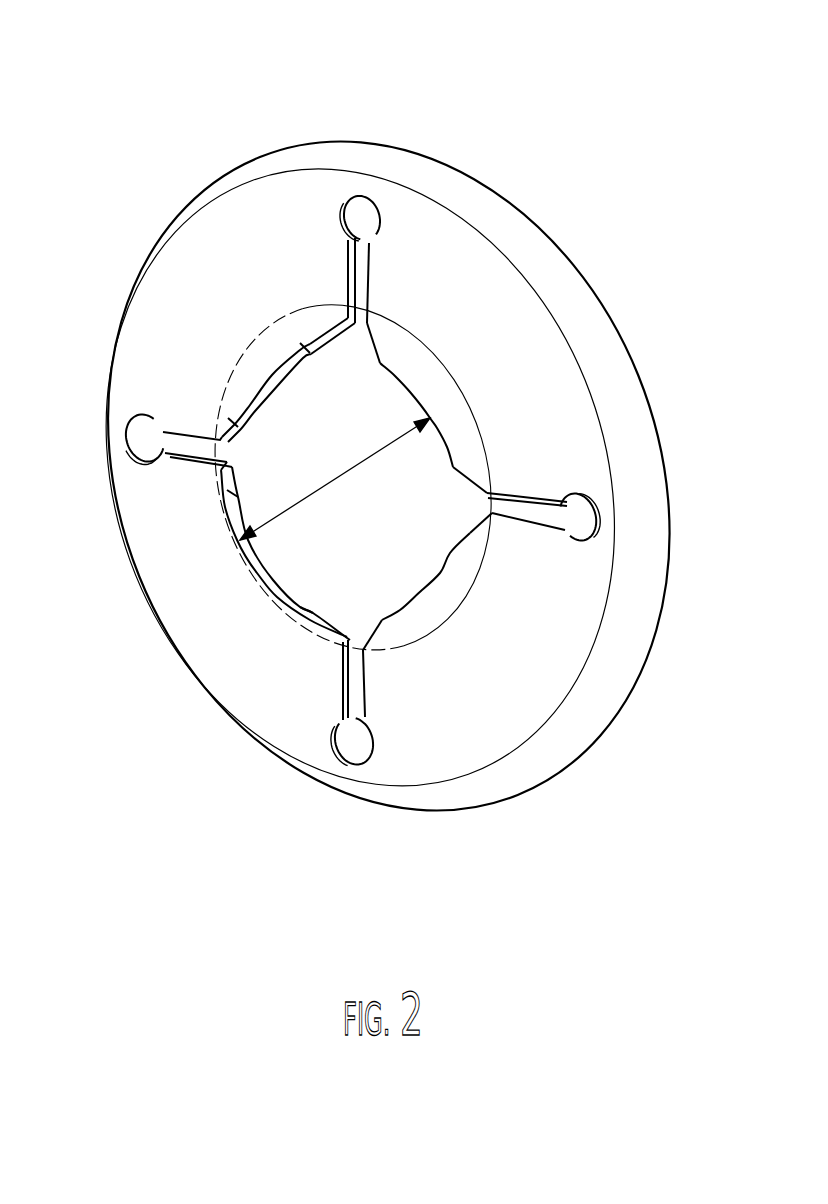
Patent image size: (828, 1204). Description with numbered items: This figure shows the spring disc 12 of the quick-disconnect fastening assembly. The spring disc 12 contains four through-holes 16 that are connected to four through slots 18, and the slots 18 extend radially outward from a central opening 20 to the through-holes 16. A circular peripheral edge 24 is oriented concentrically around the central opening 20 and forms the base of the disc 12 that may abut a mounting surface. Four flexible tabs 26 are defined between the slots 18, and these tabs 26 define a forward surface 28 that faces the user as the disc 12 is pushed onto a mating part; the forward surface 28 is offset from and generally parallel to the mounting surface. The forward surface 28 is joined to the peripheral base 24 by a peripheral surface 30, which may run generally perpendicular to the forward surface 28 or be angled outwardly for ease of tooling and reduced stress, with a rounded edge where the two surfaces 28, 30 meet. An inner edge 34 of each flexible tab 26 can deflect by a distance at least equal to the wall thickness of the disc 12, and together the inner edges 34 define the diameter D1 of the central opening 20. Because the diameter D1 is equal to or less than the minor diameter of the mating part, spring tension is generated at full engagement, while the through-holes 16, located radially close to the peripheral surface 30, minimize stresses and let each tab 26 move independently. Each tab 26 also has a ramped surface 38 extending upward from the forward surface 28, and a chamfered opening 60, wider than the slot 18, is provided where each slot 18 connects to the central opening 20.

The spring disc 12 is at (370, 118).
The through-holes 16 is at (377, 212).
The through slots 18 is at (370, 278).
The central opening 20 is at (336, 435).
The peripheral edge 24 is at (633, 675).
The flexible tabs 26 is at (508, 337).
The forward surface 28 is at (187, 327).
The peripheral surface 30 is at (560, 743).
The inner edge 34 is at (280, 573).
The ramped surface 38 is at (450, 415).
The chamfered opening 60 is at (353, 320).
The diameter of the central opening D1 is at (335, 479).